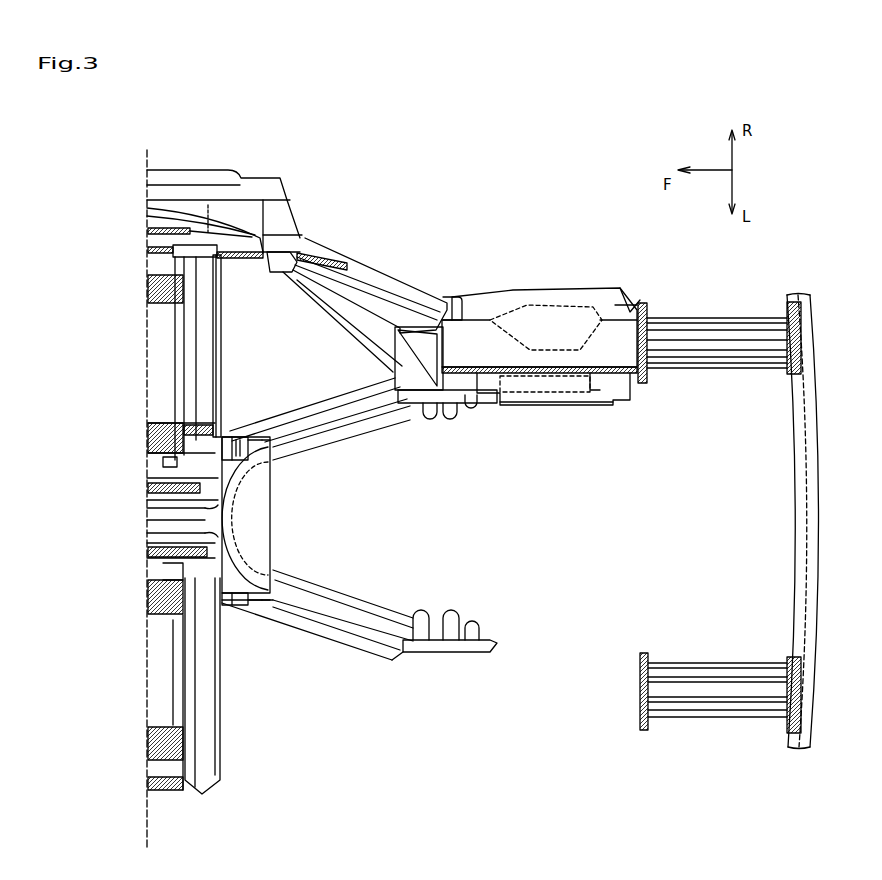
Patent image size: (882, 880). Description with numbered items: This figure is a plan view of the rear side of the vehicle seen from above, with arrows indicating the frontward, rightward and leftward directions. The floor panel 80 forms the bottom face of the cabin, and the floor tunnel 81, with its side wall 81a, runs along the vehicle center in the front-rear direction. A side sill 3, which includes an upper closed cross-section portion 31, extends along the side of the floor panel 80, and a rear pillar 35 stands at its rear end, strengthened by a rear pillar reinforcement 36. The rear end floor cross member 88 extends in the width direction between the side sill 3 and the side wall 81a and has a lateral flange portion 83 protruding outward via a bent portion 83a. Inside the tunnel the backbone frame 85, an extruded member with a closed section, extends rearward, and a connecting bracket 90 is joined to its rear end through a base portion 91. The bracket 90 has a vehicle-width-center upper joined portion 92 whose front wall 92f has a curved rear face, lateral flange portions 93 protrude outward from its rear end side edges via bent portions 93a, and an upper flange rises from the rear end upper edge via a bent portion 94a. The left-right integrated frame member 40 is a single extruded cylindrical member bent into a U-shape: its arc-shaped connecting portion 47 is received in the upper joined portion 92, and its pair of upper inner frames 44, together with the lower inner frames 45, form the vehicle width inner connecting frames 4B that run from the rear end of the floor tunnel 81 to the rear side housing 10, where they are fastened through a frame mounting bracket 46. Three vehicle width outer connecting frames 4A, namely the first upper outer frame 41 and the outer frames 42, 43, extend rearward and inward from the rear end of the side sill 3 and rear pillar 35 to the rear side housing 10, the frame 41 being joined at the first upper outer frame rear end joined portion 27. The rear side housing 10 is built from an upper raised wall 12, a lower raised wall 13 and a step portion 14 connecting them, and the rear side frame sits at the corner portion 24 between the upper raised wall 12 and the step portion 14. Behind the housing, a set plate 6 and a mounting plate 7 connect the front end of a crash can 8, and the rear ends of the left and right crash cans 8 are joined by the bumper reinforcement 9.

The side sill 3 is at (207, 168).
The upper closed cross-section portion 31 is at (151, 166).
The rear pillar 35 is at (296, 210).
The rear pillar reinforcement 36 is at (212, 205).
The vehicle width outer connecting frames 4A is at (363, 298).
The first upper outer frame 41 is at (357, 256).
The vehicle width outer connecting frame 42 is at (300, 283).
The vehicle width outer connecting frame 43 is at (330, 300).
The vehicle width inner connecting frames 4B is at (317, 513).
The upper inner frame 44 is at (295, 458).
The lower inner frame 45 is at (330, 388).
The left-right integrated frame member 40 is at (401, 424).
The frame mounting bracket 46 is at (460, 420).
The connecting portion 47 is at (242, 527).
The first upper outer frame rear end joined portion 27 is at (440, 315).
The rear side housing 10 is at (565, 288).
The upper raised wall 12 is at (540, 295).
The lower raised wall 13 is at (585, 406).
The step portion 14 is at (545, 372).
The corner portion 24 is at (628, 300).
The set plate 6 is at (641, 317).
The mounting plate 7 is at (667, 321).
The crash can 8 is at (725, 313).
The bumper reinforcement 9 is at (815, 372).
The floor panel 80 is at (150, 354).
The floor tunnel 81 is at (137, 537).
The side wall 81a is at (147, 485).
The lateral flange portion 83 is at (236, 437).
The bent portion 83a is at (240, 437).
The backbone frame 85 is at (150, 549).
The rear end floor cross member 88 is at (222, 303).
The connecting bracket 90 is at (216, 440).
The base portion 91 is at (163, 460).
The vehicle-width-center upper joined portion 92 is at (241, 446).
The front wall 92f is at (150, 513).
The lateral flange portion 93 is at (255, 440).
The bent portion 93a is at (270, 440).
The bent portion 94a is at (275, 496).